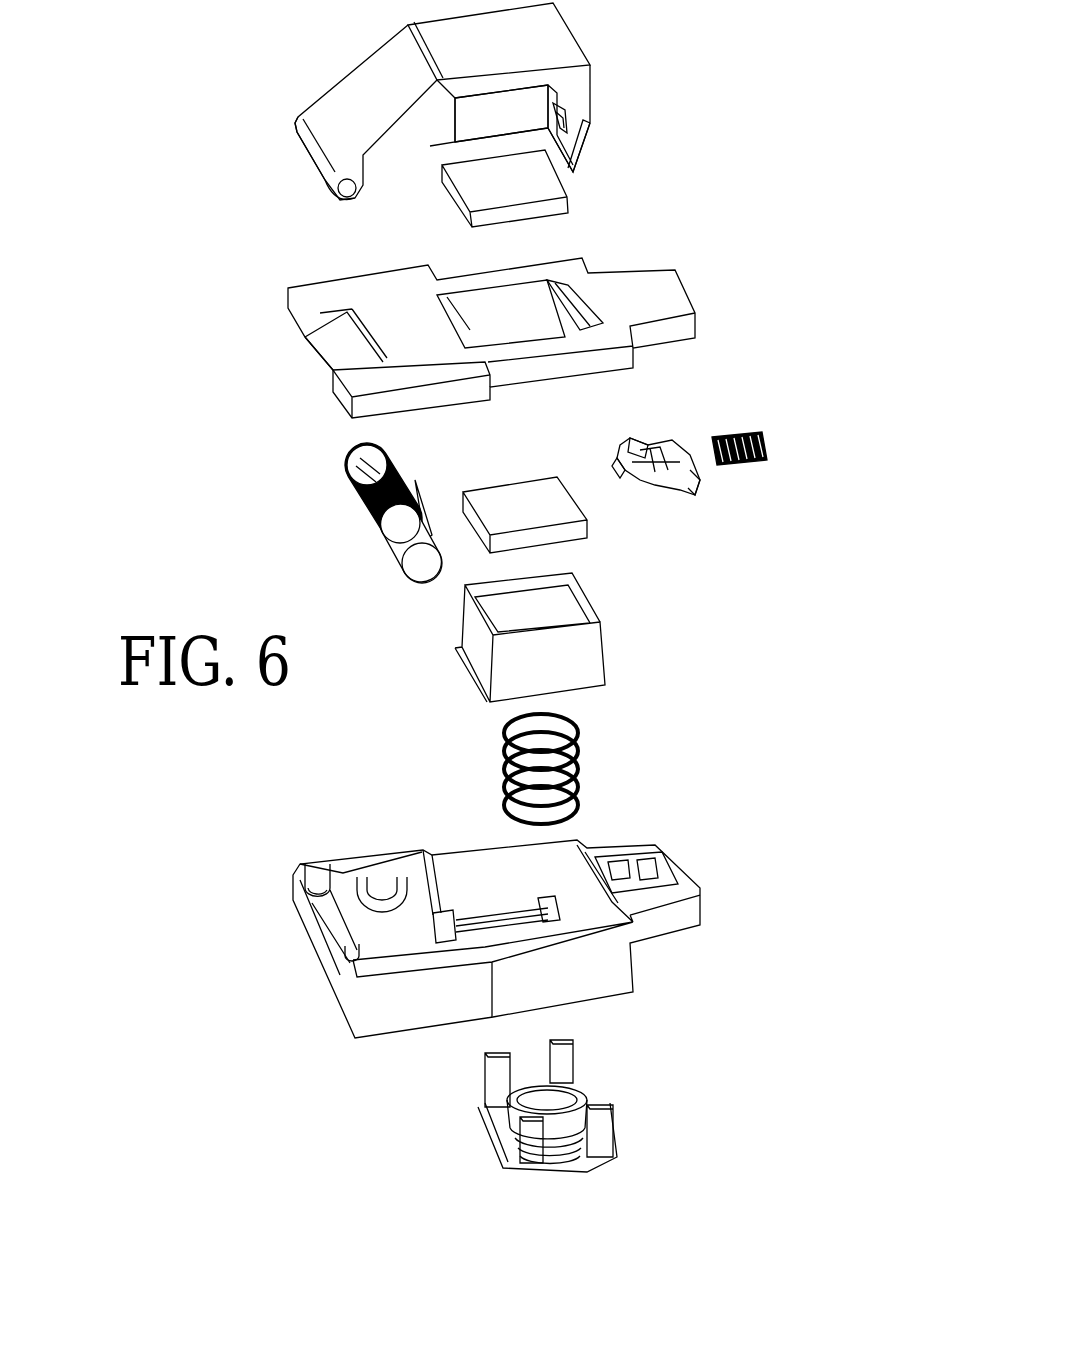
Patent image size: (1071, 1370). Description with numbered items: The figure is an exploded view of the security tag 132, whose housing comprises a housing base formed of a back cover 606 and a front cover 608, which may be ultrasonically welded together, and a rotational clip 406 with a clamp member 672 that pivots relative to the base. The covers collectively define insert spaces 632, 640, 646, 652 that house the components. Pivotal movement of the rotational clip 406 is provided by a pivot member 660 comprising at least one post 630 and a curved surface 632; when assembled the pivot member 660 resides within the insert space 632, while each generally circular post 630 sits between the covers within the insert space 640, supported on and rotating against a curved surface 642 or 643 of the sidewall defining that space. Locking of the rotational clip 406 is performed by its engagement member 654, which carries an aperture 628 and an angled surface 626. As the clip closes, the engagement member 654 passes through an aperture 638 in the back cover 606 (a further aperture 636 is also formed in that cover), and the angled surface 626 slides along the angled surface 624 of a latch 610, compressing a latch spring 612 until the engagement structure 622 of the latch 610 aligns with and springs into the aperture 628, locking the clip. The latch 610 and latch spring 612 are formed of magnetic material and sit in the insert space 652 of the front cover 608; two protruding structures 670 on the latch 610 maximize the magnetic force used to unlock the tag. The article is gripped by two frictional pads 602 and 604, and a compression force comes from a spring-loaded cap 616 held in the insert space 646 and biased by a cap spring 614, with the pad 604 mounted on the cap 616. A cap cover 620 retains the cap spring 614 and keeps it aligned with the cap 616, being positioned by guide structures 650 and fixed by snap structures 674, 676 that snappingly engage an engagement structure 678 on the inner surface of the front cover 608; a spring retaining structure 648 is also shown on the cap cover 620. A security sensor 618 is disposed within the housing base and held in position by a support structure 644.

The security tag 132 is at (183, 68).
The rotational clip 406 is at (598, 35).
The clamp member 672 is at (490, 52).
The pivot member 660 is at (295, 140).
The post 630 is at (336, 190).
The curved surface / insert space 632 is at (338, 353).
The engagement member 654 is at (690, 100).
The angled surface 626 is at (592, 155).
The aperture 628 is at (557, 120).
The pad 602 is at (584, 200).
The back cover 606 is at (702, 302).
The aperture 636 is at (507, 322).
The aperture 638 is at (587, 299).
The latch 610 is at (660, 500).
The engagement structure 622 is at (637, 462).
The angled surface 624 is at (618, 480).
The protruding structure 670 is at (702, 497).
The latch spring 612 is at (772, 445).
The pad 604 is at (528, 474).
The security sensor 618 is at (352, 510).
The cap 616 is at (622, 657).
The cap spring 614 is at (582, 768).
The front cover 608 is at (707, 877).
The support structure 644 is at (375, 897).
The insert space 640 is at (350, 926).
The engagement structure 678 is at (476, 912).
The insert space 652 is at (648, 864).
The curved surface 642 is at (323, 908).
The curved surface 643 is at (349, 960).
The insert space 646 is at (560, 926).
The cap cover 620 is at (620, 1104).
The guide structure 650 is at (578, 1043).
The spring retaining structure 648 is at (506, 1102).
The snap structure 674 is at (492, 1143).
The snap structure 676 is at (590, 1164).